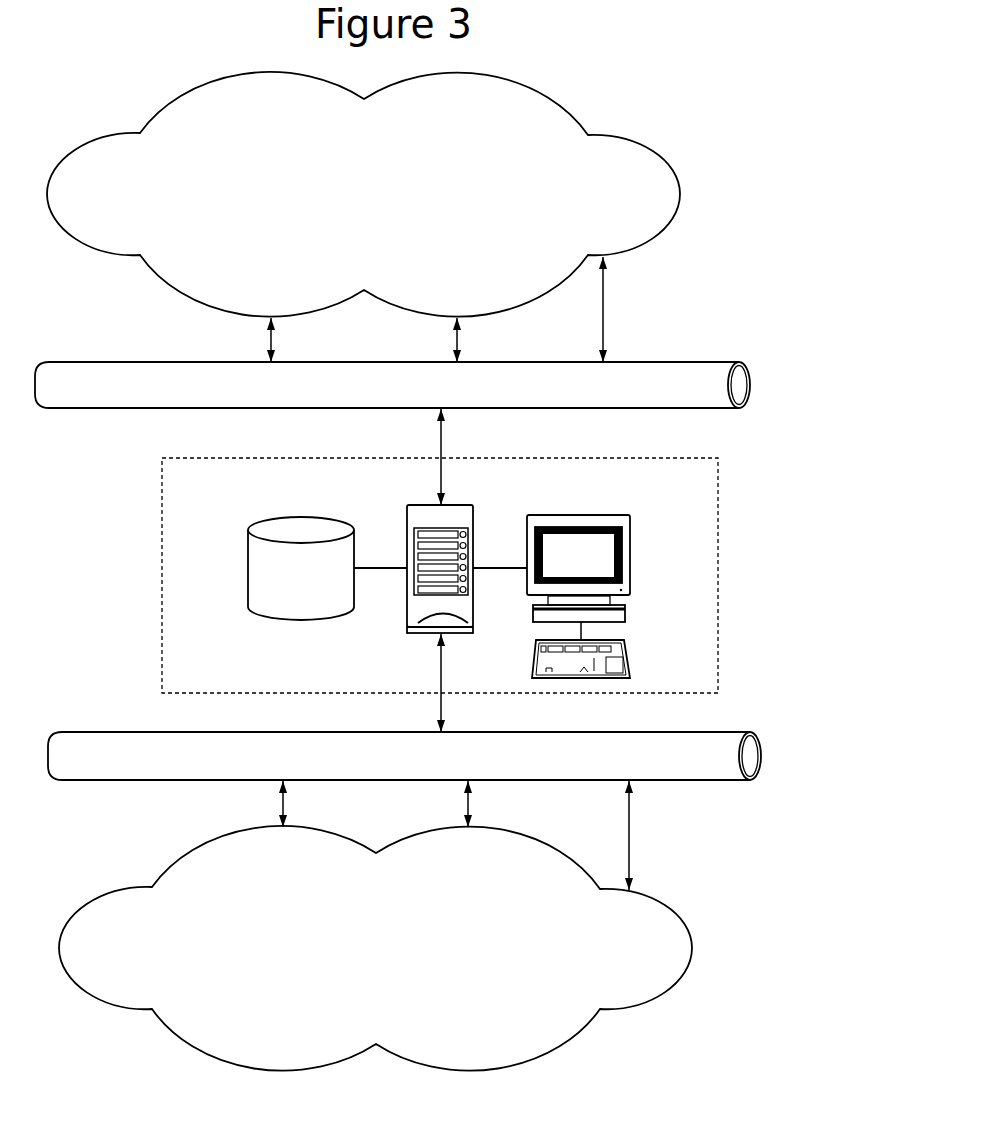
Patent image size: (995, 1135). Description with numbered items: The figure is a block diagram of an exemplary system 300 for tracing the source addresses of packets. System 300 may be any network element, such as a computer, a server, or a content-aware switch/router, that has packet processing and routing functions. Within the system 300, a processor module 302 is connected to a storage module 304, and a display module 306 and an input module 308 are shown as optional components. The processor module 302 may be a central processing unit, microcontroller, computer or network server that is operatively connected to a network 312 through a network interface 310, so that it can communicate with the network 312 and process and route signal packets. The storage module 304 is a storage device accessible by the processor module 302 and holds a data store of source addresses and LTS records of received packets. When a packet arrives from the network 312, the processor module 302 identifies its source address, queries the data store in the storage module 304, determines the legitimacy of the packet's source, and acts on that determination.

The system 300 is at (249, 472).
The processor module 302 is at (425, 512).
The storage module 304 is at (248, 566).
The display module 306 is at (633, 568).
The input module 308 is at (632, 656).
The network interface 310 is at (603, 362).
The network 312 is at (369, 571).